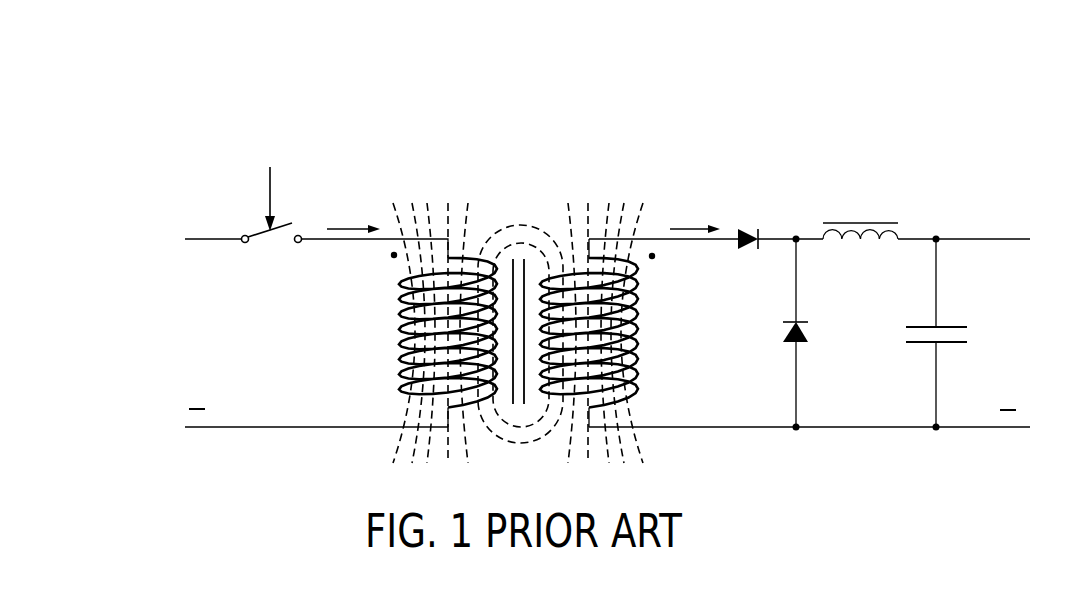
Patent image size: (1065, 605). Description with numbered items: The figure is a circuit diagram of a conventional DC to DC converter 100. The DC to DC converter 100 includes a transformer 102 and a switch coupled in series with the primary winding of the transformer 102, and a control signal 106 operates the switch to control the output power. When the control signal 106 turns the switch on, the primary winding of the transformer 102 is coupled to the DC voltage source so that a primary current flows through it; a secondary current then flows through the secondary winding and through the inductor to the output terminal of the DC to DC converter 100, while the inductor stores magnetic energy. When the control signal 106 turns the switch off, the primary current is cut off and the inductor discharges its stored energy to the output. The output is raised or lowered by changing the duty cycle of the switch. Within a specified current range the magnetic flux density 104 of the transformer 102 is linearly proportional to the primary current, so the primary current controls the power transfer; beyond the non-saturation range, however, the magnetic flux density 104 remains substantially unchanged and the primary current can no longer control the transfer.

The DC to DC converter 100 is at (186, 116).
The transformer 102 is at (562, 156).
The magnetic flux density 104 is at (466, 233).
The control signal 106 is at (270, 186).